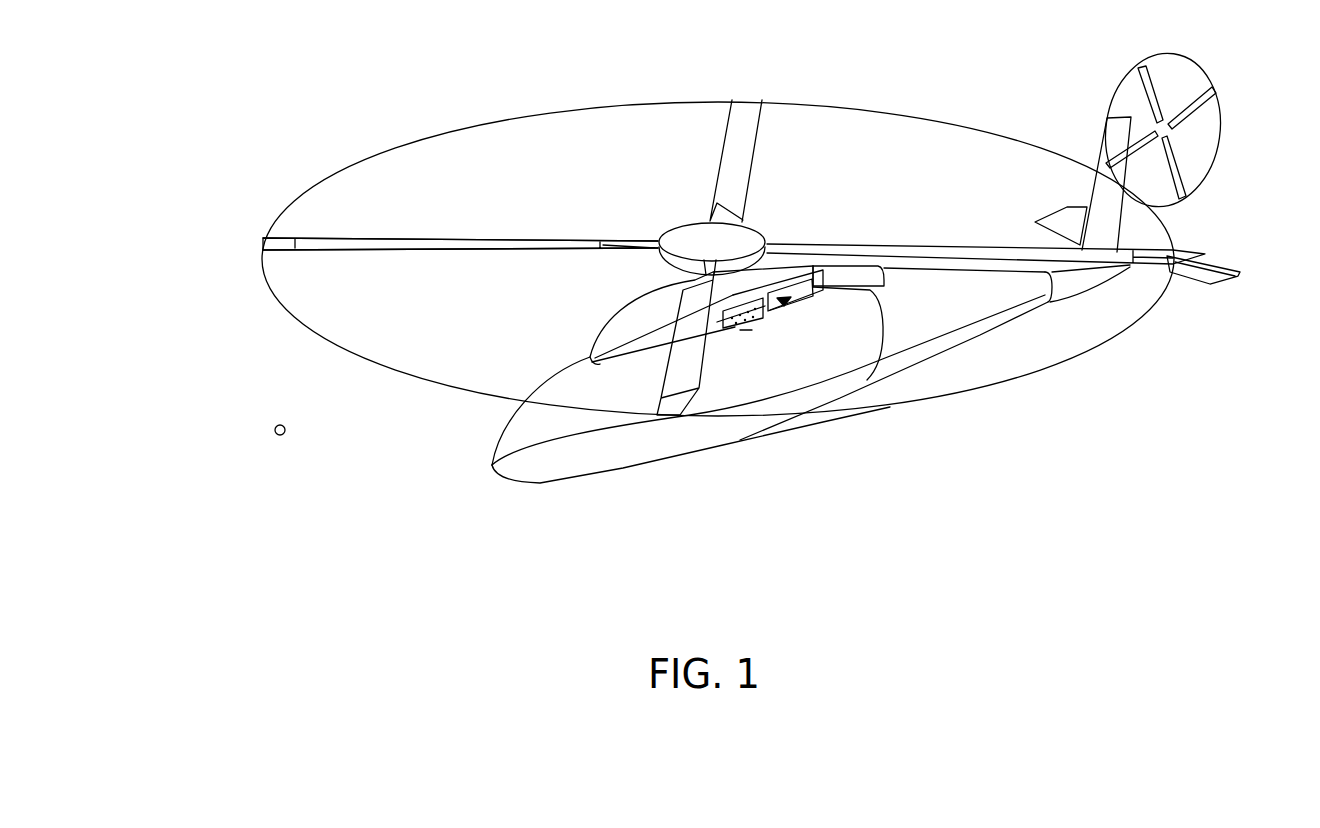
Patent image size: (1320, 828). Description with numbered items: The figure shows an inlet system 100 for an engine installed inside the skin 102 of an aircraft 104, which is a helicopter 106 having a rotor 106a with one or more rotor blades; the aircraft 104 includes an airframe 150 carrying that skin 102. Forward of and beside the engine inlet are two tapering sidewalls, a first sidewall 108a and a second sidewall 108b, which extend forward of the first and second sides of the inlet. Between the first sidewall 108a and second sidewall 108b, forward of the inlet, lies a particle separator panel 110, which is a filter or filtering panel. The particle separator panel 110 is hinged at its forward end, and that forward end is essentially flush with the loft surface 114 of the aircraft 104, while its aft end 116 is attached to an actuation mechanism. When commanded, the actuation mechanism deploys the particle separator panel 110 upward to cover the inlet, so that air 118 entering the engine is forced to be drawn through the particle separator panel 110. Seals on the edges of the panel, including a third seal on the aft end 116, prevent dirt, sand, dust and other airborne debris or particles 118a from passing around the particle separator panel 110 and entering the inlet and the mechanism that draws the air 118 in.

The inlet system 100 is at (790, 331).
The skin 102 is at (850, 338).
The aircraft 104 is at (473, 530).
The helicopter 106 is at (413, 473).
The rotor 106a is at (460, 250).
The first sidewall 108a is at (738, 280).
The second sidewall 108b is at (747, 335).
The particle separator panel 110 is at (760, 328).
The loft surface 114 is at (713, 332).
The aft end 116 is at (825, 268).
The air 118 is at (286, 355).
The particles 118a is at (286, 427).
The airframe 150 is at (925, 367).